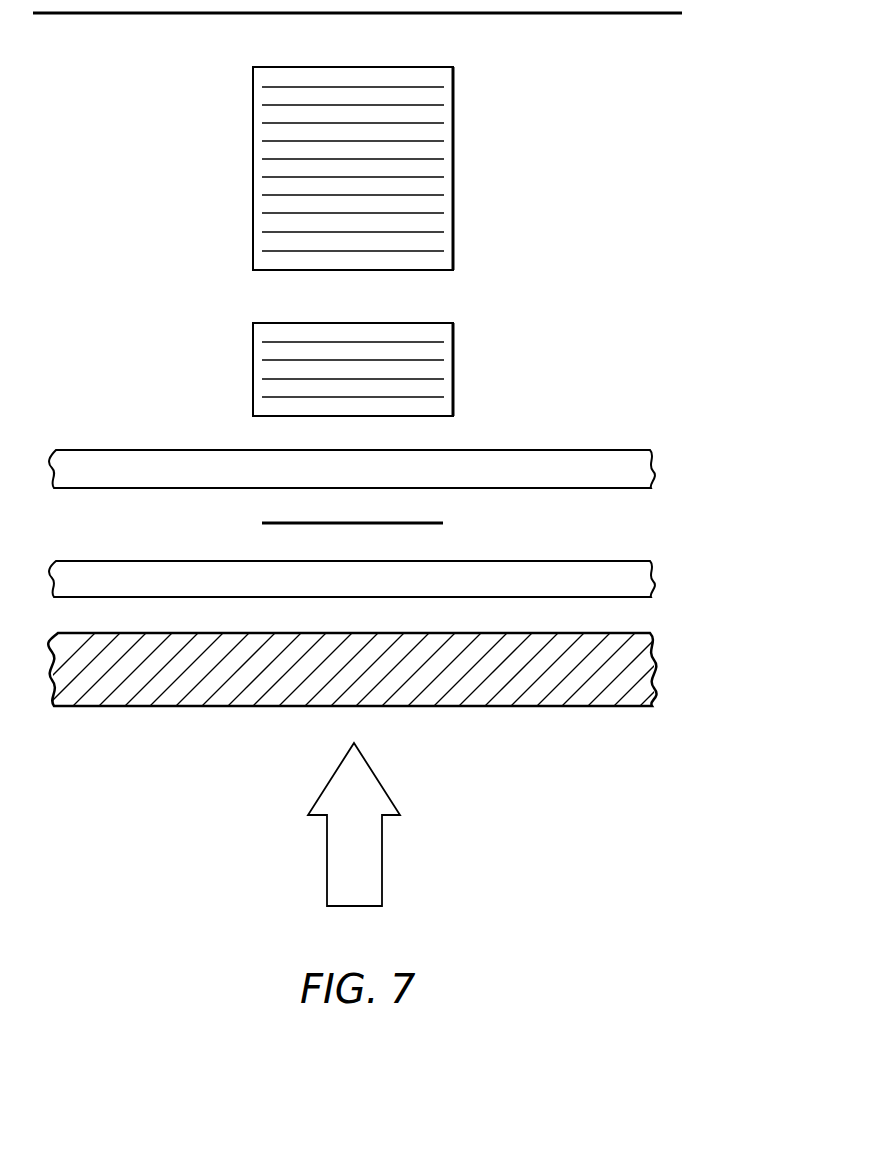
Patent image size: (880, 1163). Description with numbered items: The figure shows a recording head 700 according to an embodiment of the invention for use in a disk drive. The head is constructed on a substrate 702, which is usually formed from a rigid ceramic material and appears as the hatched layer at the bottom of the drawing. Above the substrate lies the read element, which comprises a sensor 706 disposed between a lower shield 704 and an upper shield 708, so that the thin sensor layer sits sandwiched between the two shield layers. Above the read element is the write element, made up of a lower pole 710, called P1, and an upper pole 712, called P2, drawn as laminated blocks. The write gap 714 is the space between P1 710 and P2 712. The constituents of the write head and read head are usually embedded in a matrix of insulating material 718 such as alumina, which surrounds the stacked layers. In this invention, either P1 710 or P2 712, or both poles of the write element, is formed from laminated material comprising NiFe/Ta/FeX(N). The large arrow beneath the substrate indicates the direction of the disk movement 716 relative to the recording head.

The head 700 is at (604, 740).
The substrate 702 is at (657, 672).
The lower shield 704 is at (657, 577).
The sensor 706 is at (443, 525).
The upper shield 708 is at (657, 467).
The lower pole 710 is at (454, 367).
The upper pole 712 is at (454, 84).
The write gap 714 is at (435, 299).
The direction of disk movement 716 is at (383, 858).
The insulating material 718 is at (162, 142).